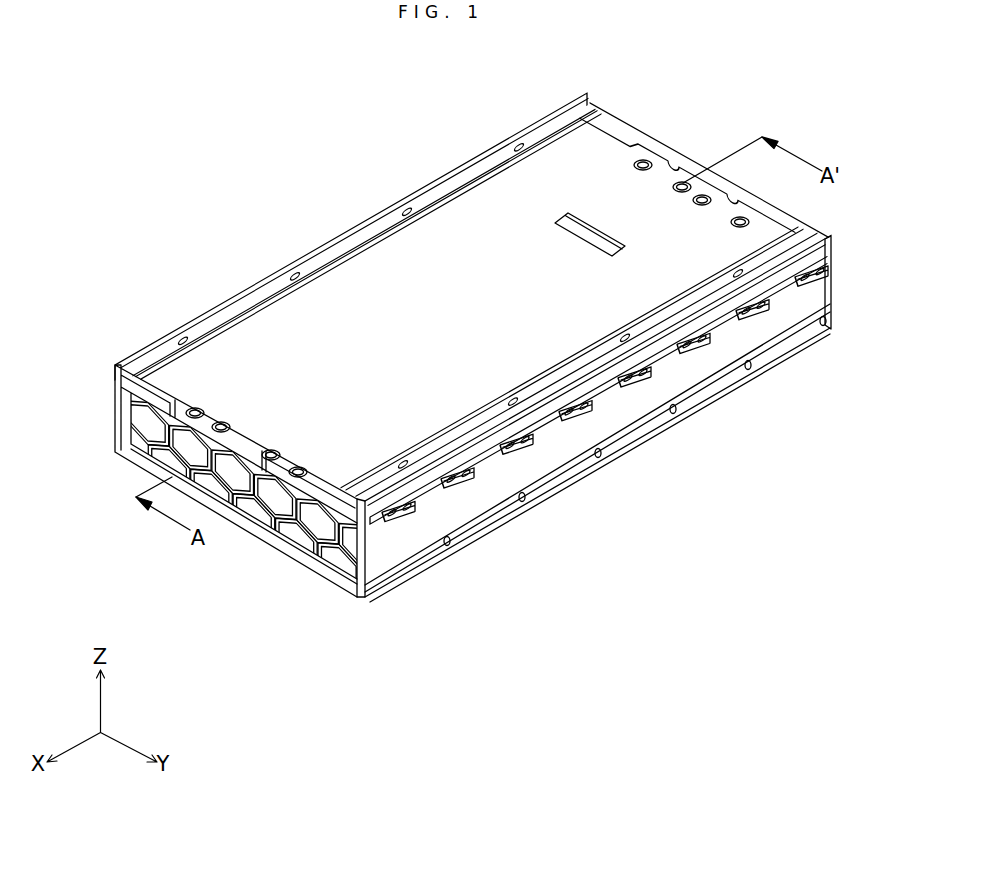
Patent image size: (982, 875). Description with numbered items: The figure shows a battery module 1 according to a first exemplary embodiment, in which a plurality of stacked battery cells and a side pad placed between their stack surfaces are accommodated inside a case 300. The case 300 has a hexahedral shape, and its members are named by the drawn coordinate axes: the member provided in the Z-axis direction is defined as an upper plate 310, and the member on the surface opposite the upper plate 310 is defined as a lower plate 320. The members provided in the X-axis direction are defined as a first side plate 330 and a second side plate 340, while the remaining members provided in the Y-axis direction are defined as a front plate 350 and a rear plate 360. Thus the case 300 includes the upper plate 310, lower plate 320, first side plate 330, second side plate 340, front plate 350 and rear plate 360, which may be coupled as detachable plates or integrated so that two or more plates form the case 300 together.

The battery module 1 is at (296, 134).
The case 300 is at (207, 286).
The upper plate 310 is at (493, 187).
The lower plate 320 is at (562, 477).
The first side plate 330 is at (277, 513).
The second side plate 340 is at (661, 142).
The front plate 350 is at (618, 415).
The rear plate 360 is at (330, 241).